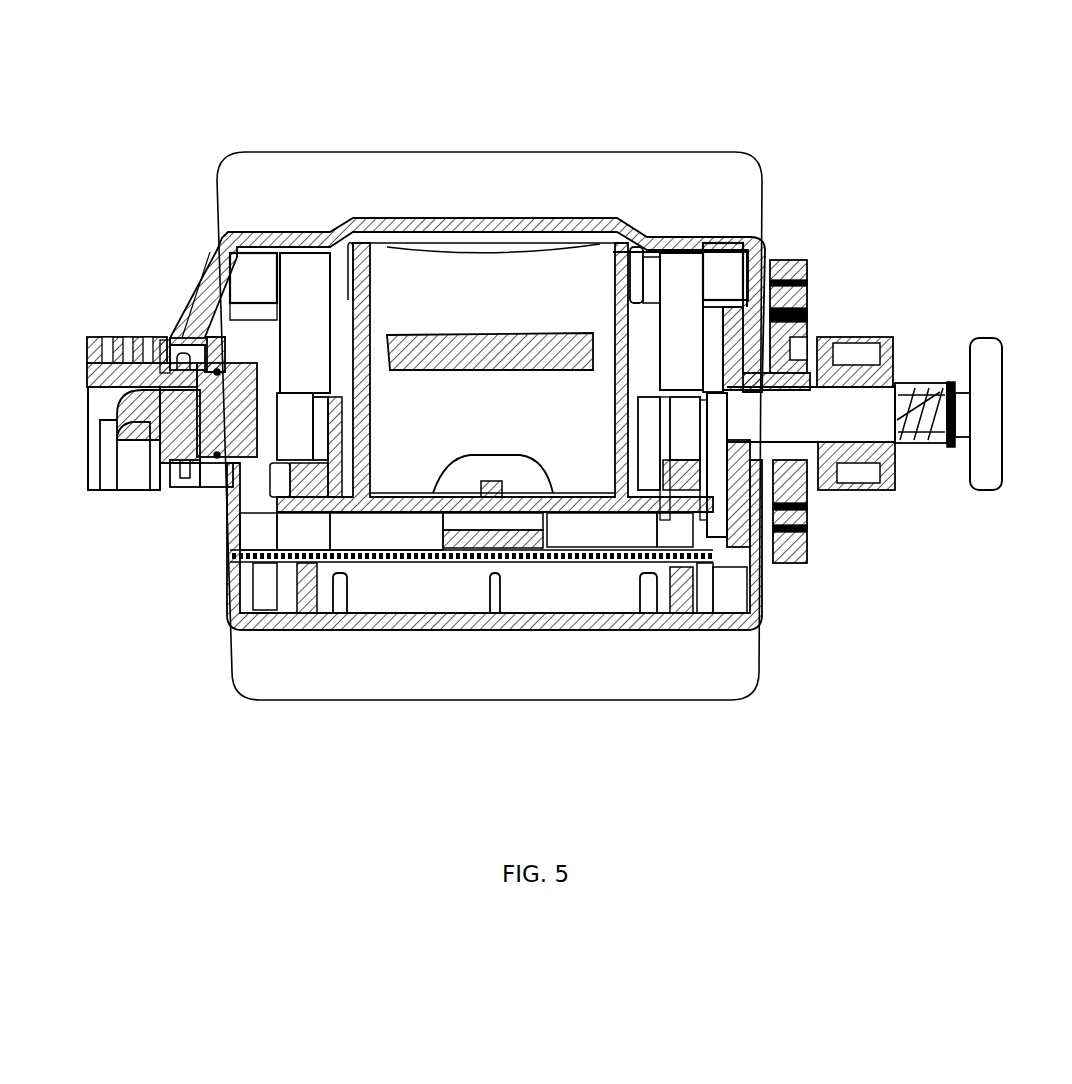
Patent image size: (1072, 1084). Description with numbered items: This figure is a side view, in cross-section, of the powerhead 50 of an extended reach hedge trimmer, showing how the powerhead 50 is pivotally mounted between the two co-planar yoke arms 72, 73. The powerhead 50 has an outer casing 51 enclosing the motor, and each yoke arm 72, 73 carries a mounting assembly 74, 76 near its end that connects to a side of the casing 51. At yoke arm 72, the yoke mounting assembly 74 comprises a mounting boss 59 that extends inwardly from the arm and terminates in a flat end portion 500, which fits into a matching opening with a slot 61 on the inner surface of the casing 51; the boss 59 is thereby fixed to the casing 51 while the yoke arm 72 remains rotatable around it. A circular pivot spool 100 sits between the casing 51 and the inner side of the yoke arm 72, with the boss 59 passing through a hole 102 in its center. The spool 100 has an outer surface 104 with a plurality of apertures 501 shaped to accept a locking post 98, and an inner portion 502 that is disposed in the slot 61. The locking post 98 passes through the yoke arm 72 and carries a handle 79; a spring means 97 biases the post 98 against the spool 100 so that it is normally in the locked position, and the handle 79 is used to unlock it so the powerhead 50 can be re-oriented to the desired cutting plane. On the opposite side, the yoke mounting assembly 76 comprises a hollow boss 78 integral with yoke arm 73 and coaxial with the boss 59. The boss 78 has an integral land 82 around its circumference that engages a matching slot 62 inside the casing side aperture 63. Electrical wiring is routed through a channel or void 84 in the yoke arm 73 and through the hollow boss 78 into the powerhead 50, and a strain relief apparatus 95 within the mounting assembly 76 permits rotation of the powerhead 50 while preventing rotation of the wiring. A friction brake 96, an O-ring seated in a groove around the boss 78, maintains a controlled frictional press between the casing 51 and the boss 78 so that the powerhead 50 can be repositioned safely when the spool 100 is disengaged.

The powerhead 50 is at (257, 152).
The outer casing 51 is at (217, 248).
The powerhead casing side aperture 63 is at (193, 338).
The flat end portion 500 is at (700, 415).
The inner portion 502 is at (718, 300).
The slot 61 is at (742, 288).
The apertures 501 is at (792, 298).
The hole 102 is at (808, 350).
The mounting boss 59 is at (838, 417).
The locking post 98 is at (943, 390).
The spring means 97 is at (913, 437).
The handle 79 is at (987, 483).
The yoke mounting assembly 74 is at (905, 305).
The yoke arm 72 is at (815, 447).
The outer surface 104 is at (813, 550).
The circular pivot spool 100 is at (783, 567).
The yoke arm 73 is at (87, 363).
The yoke mounting assembly 76 is at (152, 293).
The hollow boss 78 is at (157, 440).
The channel or void 84 is at (117, 455).
The strain relief apparatus 95 is at (140, 425).
The land 82 is at (182, 477).
The slot 62 is at (200, 478).
The friction brake 96 is at (218, 371).